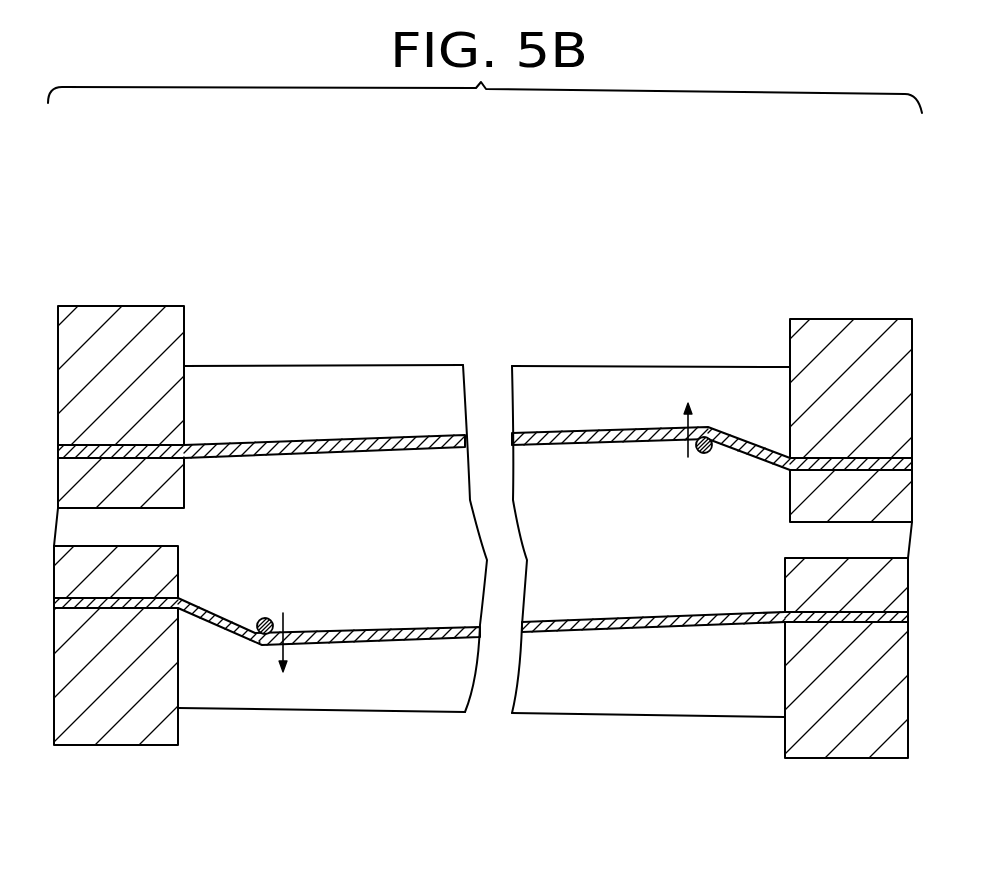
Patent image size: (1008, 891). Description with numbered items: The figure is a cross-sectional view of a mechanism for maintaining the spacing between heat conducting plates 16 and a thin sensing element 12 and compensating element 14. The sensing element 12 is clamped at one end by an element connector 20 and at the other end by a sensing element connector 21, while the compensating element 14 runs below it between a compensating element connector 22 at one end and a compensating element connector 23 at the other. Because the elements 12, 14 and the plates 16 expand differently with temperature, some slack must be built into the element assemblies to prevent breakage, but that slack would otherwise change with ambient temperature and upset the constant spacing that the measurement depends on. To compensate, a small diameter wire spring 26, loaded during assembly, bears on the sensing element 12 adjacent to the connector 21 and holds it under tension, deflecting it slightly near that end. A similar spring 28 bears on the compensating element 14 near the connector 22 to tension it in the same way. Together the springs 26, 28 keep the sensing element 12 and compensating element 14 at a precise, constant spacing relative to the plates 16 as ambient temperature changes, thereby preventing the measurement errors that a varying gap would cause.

The sensing element 12 is at (265, 440).
The compensating element 14 is at (388, 644).
The plates 16 is at (532, 360).
The element connector 20 is at (147, 300).
The sensing element connector 21 is at (833, 316).
The compensating element connector 22 is at (178, 727).
The compensating element connector 23 is at (834, 760).
The wire spring 26 is at (706, 452).
The spring 28 is at (262, 618).